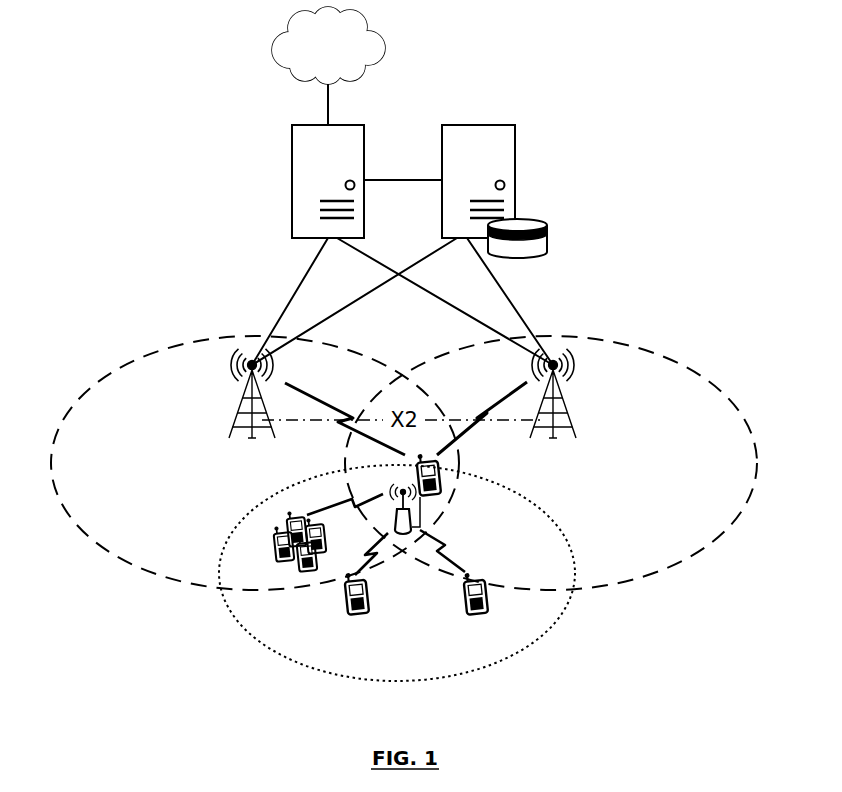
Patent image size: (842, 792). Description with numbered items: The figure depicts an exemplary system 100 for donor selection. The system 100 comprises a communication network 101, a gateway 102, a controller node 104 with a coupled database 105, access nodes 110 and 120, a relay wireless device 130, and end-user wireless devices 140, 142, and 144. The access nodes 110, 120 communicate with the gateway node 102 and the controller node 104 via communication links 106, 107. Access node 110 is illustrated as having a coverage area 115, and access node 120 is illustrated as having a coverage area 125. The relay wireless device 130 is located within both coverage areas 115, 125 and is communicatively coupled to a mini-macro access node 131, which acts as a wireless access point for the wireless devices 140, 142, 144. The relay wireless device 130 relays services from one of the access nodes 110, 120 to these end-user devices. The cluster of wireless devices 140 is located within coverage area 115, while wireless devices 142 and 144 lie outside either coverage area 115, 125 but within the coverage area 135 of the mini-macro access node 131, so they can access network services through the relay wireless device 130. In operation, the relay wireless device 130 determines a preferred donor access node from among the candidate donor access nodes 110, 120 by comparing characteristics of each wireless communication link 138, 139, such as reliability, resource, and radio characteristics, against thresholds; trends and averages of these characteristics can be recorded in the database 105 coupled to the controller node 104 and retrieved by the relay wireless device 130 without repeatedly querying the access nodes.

The system 100 is at (483, 63).
The communication network 101 is at (310, 56).
The gateway 102 is at (292, 153).
The controller node 104 is at (515, 167).
The database 105 is at (547, 237).
The communication link 106 is at (383, 266).
The communication link 107 is at (353, 304).
The access node 110 is at (238, 417).
The coverage area 115 is at (80, 406).
The access node 120 is at (570, 422).
The coverage area 125 is at (733, 406).
The relay wireless device 130 is at (437, 495).
The mini-macro access node 131 is at (398, 487).
The coverage area 135 is at (565, 537).
The wireless communication link 138 is at (316, 397).
The wireless communication link 139 is at (496, 401).
The cluster of wireless devices 140 is at (275, 537).
The end-user wireless device 142 is at (349, 615).
The end-user wireless device 144 is at (469, 615).